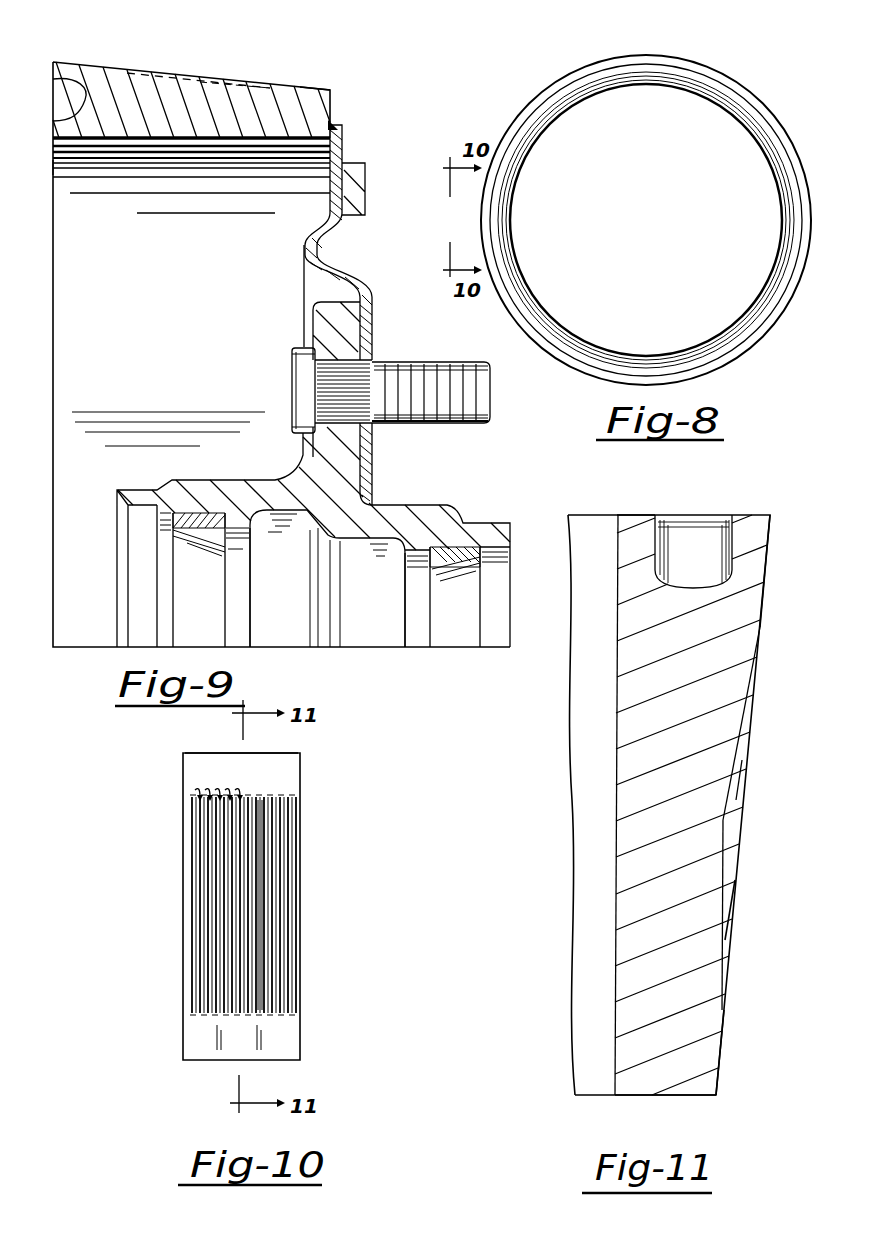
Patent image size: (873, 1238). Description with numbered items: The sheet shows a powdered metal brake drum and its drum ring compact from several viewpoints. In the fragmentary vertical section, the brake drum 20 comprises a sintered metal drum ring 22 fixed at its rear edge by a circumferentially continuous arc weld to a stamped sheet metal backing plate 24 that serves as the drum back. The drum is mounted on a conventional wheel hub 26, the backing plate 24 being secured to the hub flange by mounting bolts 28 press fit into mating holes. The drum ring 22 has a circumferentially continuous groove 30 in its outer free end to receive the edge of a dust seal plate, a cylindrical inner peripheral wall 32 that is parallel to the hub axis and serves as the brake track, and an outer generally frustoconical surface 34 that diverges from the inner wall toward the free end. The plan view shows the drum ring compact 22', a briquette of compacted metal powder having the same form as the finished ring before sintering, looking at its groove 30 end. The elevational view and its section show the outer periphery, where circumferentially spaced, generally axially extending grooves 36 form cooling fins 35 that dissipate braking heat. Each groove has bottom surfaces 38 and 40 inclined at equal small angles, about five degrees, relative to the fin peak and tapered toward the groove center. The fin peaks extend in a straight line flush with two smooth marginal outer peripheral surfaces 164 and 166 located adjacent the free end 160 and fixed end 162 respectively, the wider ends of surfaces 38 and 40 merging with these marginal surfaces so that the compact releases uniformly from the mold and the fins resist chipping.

In FIG. 9, the brake drum 20 is at (362, 144).
In FIG. 9, the sintered metal drum ring 22 is at (281, 333).
In FIG. 8, the drum ring compact 22' is at (646, 216).
In FIG. 10, the drum ring compact 22' is at (267, 902).
In FIG. 11, the drum ring compact 22' is at (697, 805).
In FIG. 9, the backing plate 24 is at (353, 270).
In FIG. 9, the wheel hub 26 is at (408, 500).
In FIG. 9, the mounting bolts 28 is at (412, 362).
In FIG. 9, the groove 30 is at (62, 100).
In FIG. 8, the groove 30 is at (630, 72).
In FIG. 11, the groove 30 is at (698, 538).
In FIG. 9, the inner peripheral wall 32 is at (53, 165).
In FIG. 11, the inner peripheral wall 32 is at (617, 795).
In FIG. 9, the outer frustoconical surface 34 is at (310, 88).
In FIG. 10, the outer frustoconical surface 34 is at (185, 760).
In FIG. 11, the outer frustoconical surface 34 is at (760, 628).
In FIG. 10, the cooling fins 35 is at (215, 898).
In FIG. 11, the cooling fins 35 is at (737, 848).
In FIG. 10, the grooves 36 is at (195, 793).
In FIG. 9, the groove bottom surface 38 is at (148, 77).
In FIG. 10, the groove bottom surface 38 is at (275, 836).
In FIG. 11, the groove bottom surface 38 is at (740, 765).
In FIG. 9, the groove bottom surface 40 is at (228, 73).
In FIG. 10, the groove bottom surface 40 is at (268, 968).
In FIG. 11, the groove bottom surface 40 is at (725, 905).
In FIG. 11, the free end 160 is at (632, 515).
In FIG. 11, the fixed end 162 is at (685, 1097).
In FIG. 11, the marginal outer peripheral surface 164 is at (768, 575).
In FIG. 11, the marginal outer peripheral surface 166 is at (722, 1055).